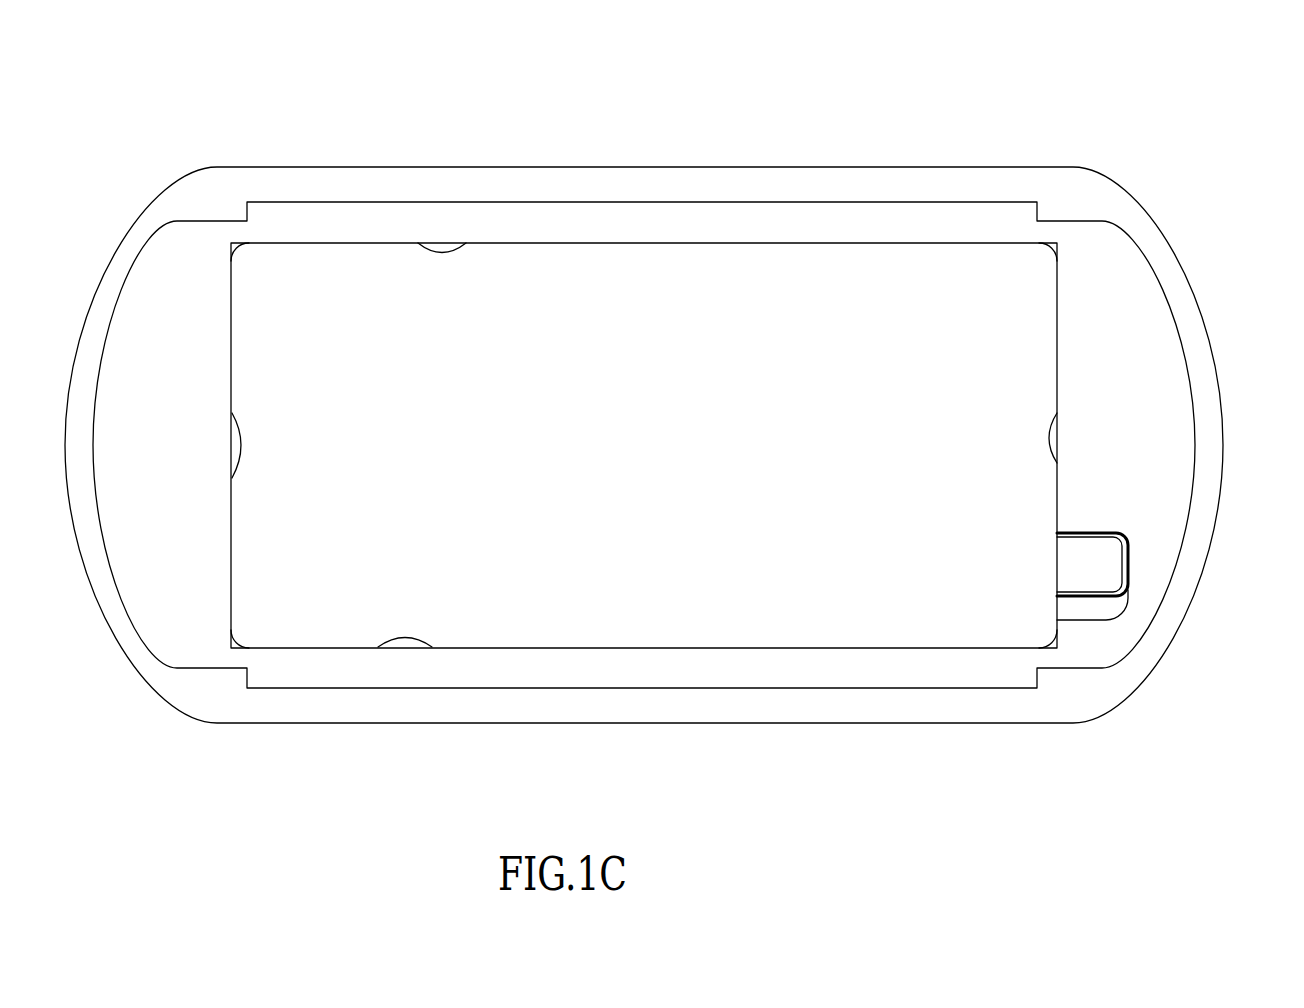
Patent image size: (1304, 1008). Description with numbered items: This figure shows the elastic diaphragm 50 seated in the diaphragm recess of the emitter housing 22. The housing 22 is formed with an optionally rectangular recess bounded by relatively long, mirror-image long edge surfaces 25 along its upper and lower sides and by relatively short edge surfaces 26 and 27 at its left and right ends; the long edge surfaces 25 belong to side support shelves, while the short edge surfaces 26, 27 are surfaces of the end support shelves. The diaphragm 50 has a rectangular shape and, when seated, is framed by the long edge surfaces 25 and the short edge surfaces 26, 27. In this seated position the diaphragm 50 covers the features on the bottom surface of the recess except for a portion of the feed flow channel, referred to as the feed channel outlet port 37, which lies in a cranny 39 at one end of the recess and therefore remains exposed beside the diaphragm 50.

The housing 22 is at (1170, 132).
The long edge surfaces 25 is at (430, 249).
The short edge surface 26 is at (232, 413).
The short edge surface 27 is at (1057, 413).
The elastic diaphragm 50 is at (848, 434).
The feed channel outlet port 37 is at (1098, 556).
The cranny 39 is at (1095, 608).